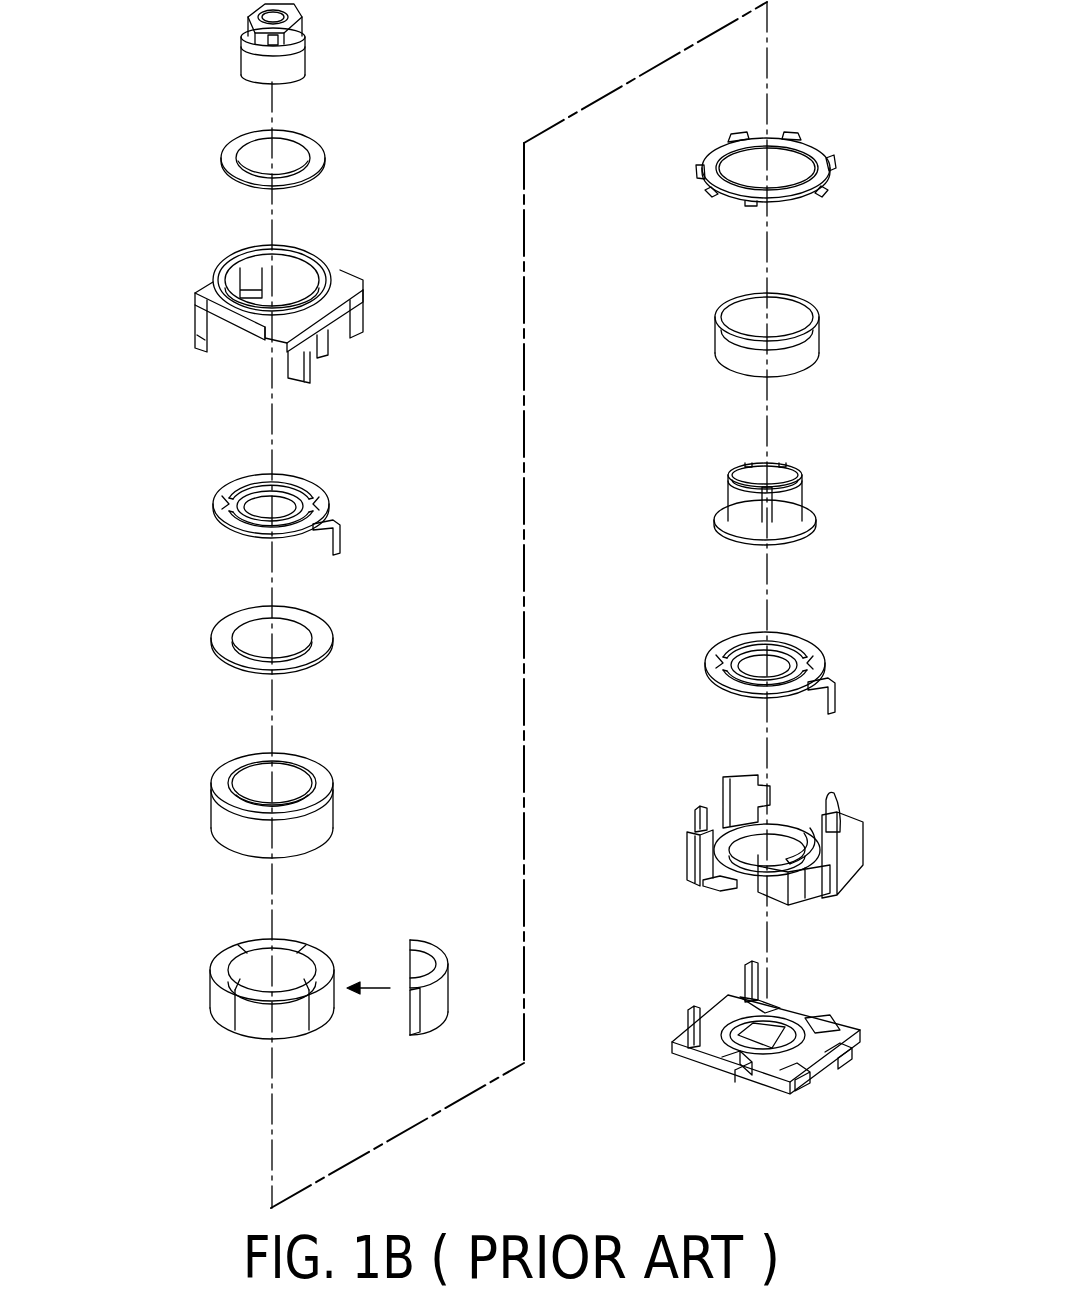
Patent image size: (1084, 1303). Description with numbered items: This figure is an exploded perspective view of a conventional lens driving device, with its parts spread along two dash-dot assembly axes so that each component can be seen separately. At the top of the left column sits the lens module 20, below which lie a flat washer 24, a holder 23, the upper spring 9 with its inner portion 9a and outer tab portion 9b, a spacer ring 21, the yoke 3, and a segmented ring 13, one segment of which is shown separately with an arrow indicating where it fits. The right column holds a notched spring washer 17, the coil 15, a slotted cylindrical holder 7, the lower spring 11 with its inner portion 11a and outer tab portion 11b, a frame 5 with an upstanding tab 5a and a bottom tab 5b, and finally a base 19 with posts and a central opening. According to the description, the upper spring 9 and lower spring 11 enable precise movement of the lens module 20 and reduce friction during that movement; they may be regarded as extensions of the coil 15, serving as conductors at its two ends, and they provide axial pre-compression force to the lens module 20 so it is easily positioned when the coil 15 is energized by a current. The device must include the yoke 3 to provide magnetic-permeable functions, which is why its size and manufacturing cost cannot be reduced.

The lens module 20 is at (255, 62).
The washer 24 is at (228, 160).
The upper holder 23 is at (205, 292).
The upper spring 9 is at (215, 505).
The spring inner portion 9a is at (315, 492).
The spring outer portion 9b is at (330, 505).
The spacer 21 is at (225, 635).
The yoke 3 is at (220, 785).
The yoke ring 13 is at (213, 970).
The spring washer 17 is at (810, 145).
The coil 15 is at (815, 310).
The lens holder 7 is at (793, 505).
The lower spring 11 is at (707, 665).
The spring inner portion 11a is at (745, 645).
The spring outer portion 11b is at (805, 650).
The frame 5 is at (700, 840).
The frame tab 5a is at (740, 805).
The frame bottom 5b is at (745, 885).
The base 19 is at (680, 1040).